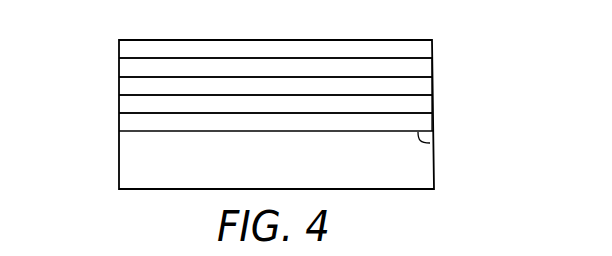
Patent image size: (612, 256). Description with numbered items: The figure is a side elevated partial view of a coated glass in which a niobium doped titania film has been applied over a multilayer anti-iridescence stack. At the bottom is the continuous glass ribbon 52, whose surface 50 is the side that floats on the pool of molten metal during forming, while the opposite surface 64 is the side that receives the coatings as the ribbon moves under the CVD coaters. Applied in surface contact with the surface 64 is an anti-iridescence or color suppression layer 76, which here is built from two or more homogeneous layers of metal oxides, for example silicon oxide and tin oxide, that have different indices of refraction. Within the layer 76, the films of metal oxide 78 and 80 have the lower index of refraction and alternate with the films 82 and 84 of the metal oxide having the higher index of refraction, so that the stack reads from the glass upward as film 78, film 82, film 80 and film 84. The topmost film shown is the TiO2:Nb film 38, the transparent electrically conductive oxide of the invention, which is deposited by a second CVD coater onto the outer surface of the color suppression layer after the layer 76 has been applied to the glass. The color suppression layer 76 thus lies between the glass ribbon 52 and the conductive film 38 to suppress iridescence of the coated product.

The TiO2:Nb film 38 is at (112, 48).
The film of higher index metal oxide 84 is at (116, 70).
The film of lower index metal oxide 80 is at (117, 83).
The film of higher index metal oxide 82 is at (117, 105).
The film of lower index metal oxide 78 is at (118, 125).
The anti-iridescence or color suppression layer 76 is at (437, 57).
The surface of the glass ribbon 64 is at (436, 142).
The glass ribbon 52 is at (420, 163).
The surface of the glass ribbon 50 is at (390, 190).